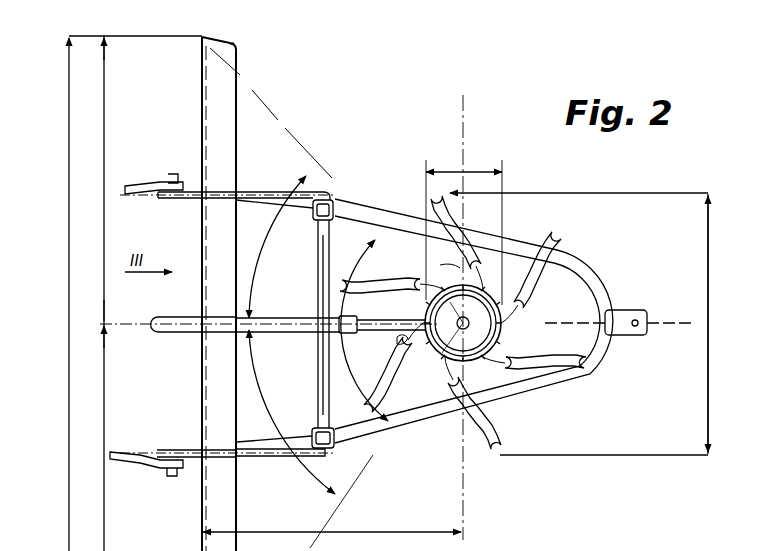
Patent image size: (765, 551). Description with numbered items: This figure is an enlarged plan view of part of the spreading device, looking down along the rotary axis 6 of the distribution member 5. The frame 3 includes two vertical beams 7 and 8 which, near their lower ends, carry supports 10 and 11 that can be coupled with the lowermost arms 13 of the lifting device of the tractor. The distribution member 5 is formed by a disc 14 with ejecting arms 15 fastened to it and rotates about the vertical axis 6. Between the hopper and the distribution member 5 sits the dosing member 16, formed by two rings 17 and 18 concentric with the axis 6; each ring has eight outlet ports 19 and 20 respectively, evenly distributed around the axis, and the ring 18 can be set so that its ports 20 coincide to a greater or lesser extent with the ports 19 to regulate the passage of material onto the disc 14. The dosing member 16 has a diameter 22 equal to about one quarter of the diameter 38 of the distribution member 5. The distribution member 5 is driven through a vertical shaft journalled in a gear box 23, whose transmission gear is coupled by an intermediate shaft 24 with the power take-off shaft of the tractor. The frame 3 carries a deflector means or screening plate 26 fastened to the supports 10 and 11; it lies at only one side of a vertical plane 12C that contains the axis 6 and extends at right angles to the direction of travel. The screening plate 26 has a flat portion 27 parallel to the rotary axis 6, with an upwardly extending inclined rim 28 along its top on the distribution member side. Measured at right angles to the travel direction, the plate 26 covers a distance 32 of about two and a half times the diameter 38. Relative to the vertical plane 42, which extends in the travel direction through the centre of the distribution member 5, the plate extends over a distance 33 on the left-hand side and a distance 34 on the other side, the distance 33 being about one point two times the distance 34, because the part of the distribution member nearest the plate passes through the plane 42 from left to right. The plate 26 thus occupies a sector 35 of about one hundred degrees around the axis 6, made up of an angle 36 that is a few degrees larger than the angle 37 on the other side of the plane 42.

The frame 3 is at (415, 434).
The distribution member 5 is at (514, 320).
The rotary axis 6 is at (463, 323).
The vertical beam 7 is at (333, 205).
The vertical beam 8 is at (312, 430).
The support 10 is at (257, 192).
The support 11 is at (262, 458).
The rotor axis 12C is at (468, 126).
The lowermost arms 13 is at (137, 183).
The disc 14 is at (493, 282).
The ejecting arms 15 is at (560, 244).
The dosing member 16 is at (499, 337).
The ring 17 is at (444, 264).
The ring 18 is at (420, 292).
The outlet ports 19 is at (400, 350).
The outlet ports 20 is at (398, 356).
The diameter 22 is at (464, 226).
The gear box 23 is at (385, 533).
The intermediate shaft 24 is at (185, 318).
The deflector means 26 is at (221, 89).
The flat portion 27 is at (202, 66).
The inclined part 28 is at (237, 26).
The distance 32 is at (69, 372).
The distance 33 is at (127, 294).
The distance 34 is at (105, 208).
The sector 35 is at (340, 350).
The angle 36 is at (263, 398).
The angle 37 is at (258, 262).
The diameter 38 is at (708, 350).
The vertical plane 42 is at (693, 322).